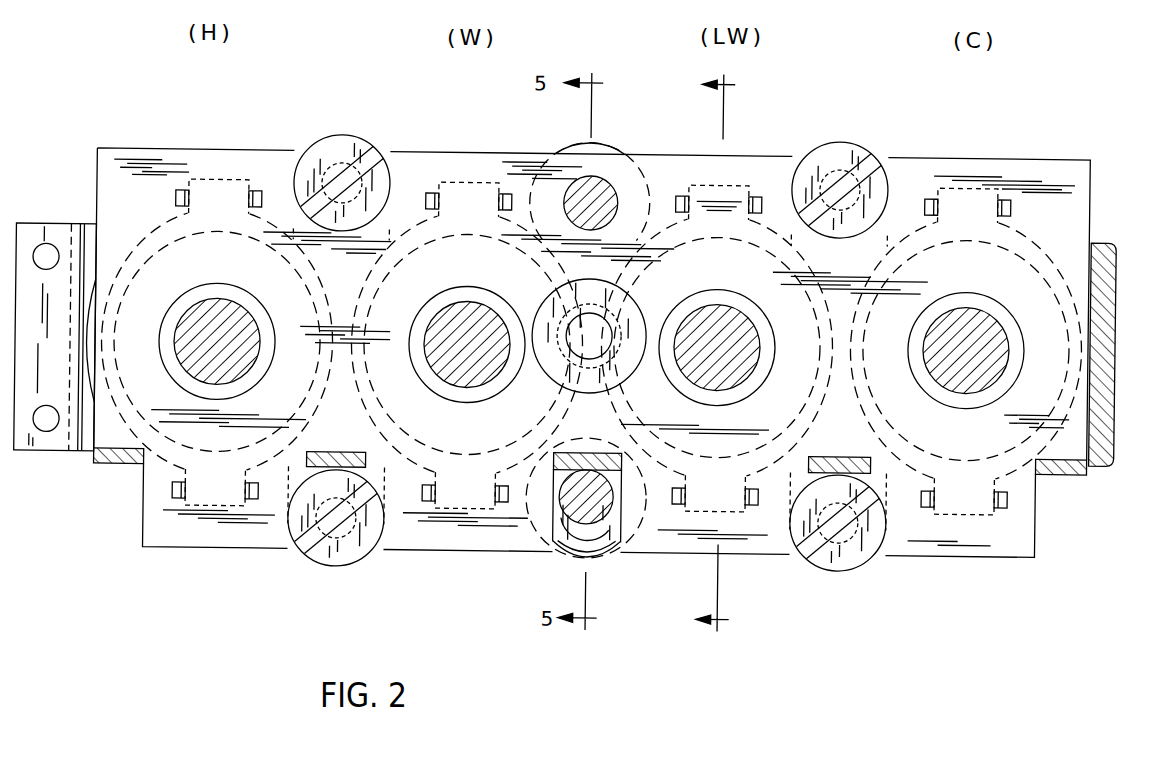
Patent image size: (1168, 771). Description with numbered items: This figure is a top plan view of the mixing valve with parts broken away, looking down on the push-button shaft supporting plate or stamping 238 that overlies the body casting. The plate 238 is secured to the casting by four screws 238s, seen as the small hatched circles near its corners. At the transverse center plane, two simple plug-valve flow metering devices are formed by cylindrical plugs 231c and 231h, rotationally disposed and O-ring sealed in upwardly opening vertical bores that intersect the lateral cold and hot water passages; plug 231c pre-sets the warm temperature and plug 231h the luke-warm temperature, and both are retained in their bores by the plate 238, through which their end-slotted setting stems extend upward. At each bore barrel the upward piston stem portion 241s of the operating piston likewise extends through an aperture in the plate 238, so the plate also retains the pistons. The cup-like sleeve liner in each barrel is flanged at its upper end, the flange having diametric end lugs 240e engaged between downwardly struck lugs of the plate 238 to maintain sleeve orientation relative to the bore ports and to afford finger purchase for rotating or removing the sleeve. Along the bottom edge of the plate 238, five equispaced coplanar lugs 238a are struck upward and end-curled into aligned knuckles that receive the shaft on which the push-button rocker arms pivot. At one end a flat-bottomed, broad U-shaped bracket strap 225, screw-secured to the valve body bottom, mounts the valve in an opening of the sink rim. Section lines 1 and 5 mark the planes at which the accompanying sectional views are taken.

The end plate with mounting holes 5 is at (33, 245).
The section line 1- 1 is at (707, 353).
The bracket strap 225 is at (1113, 262).
The cylindrical plug 231c is at (597, 178).
The cylindrical plug 231h is at (592, 548).
The push-button shaft supporting plate 238 is at (980, 152).
The screws 238s is at (844, 141).
The lugs 238a is at (1043, 458).
The upward piston stem portion 241s is at (735, 331).
The end lugs 240e is at (474, 498).